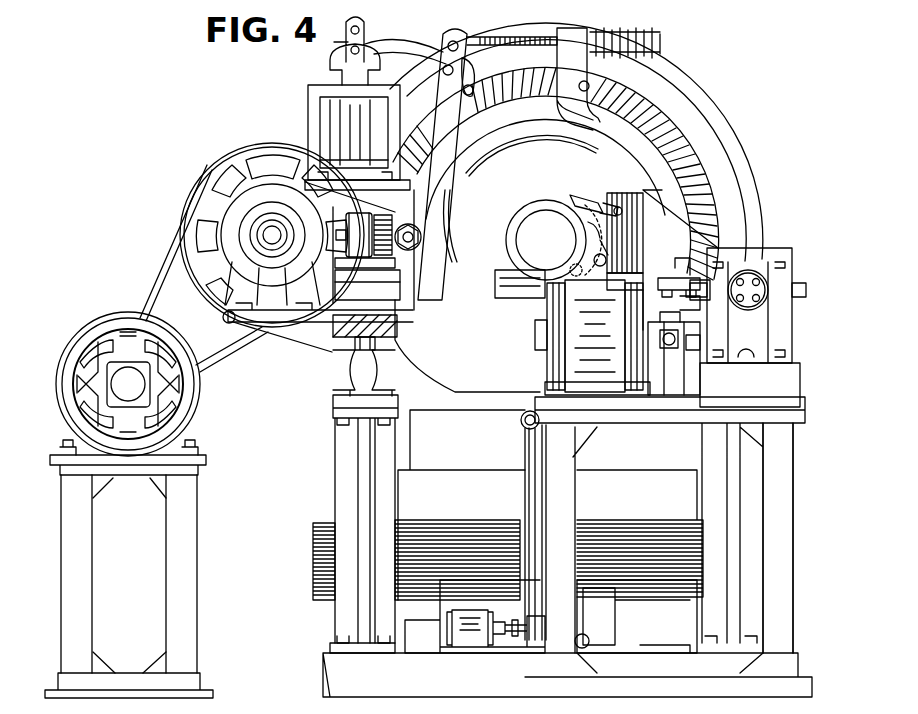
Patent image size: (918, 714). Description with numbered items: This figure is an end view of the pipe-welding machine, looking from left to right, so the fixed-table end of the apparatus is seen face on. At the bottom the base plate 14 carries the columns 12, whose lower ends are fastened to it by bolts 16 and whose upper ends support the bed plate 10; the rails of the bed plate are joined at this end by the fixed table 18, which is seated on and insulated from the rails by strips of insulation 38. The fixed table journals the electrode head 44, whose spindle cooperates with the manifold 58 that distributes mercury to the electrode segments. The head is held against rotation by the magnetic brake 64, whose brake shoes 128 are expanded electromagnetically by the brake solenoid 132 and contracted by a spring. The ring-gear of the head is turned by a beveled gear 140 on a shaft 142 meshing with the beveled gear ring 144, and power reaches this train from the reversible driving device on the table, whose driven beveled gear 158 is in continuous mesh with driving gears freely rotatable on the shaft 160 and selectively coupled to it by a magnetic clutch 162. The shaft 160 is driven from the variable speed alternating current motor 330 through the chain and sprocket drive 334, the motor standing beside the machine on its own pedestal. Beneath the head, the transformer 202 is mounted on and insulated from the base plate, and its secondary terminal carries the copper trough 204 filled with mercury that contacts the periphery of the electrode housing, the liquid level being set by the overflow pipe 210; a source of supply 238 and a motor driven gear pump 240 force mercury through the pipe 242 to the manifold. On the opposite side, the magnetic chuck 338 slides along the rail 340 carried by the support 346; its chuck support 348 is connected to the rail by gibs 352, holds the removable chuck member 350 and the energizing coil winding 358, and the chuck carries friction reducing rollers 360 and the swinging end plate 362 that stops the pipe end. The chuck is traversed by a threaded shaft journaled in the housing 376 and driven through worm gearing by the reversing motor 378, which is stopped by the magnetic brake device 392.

The bed plate 10 is at (346, 365).
The columns 12 is at (347, 462).
The base plate 14 is at (335, 668).
The bolts 16 is at (340, 632).
The fixed table 18 is at (440, 368).
The strips of insulation 38 is at (340, 335).
The electrode head 44 is at (742, 165).
The manifold 58 is at (535, 140).
The magnetic brake 64 is at (432, 128).
The brake shoes 128 is at (456, 196).
The brake solenoid 132 is at (334, 122).
The beveled gear 140 is at (406, 222).
The shaft 142 is at (364, 212).
The beveled gear ring 144 is at (700, 148).
The driven beveled gear 158 is at (338, 282).
The shaft 160 is at (272, 224).
The magnetic clutch 162 is at (246, 172).
The transformer 202 is at (452, 476).
The trough 204 is at (478, 416).
The overflow pipe 210 is at (524, 456).
The source of supply 238 is at (603, 618).
The motor driven gear pump 240 is at (536, 640).
The pipe 242 is at (540, 482).
The variable speed alternating current motor 330 is at (186, 386).
The chain and sprocket drive 334 is at (165, 263).
The magnetic chuck 338 is at (671, 279).
The rail 340 is at (698, 270).
The support 346 is at (780, 548).
The chuck support 348 is at (655, 198).
The chuck member 350 is at (592, 200).
The gibs 352 is at (666, 278).
The energizing coil winding 358 is at (635, 222).
The friction reducing rollers 360 is at (580, 204).
The end plate 362 is at (586, 229).
The housing 376 is at (780, 252).
The reversing motor 378 is at (575, 350).
The magnetic brake device 392 is at (680, 360).